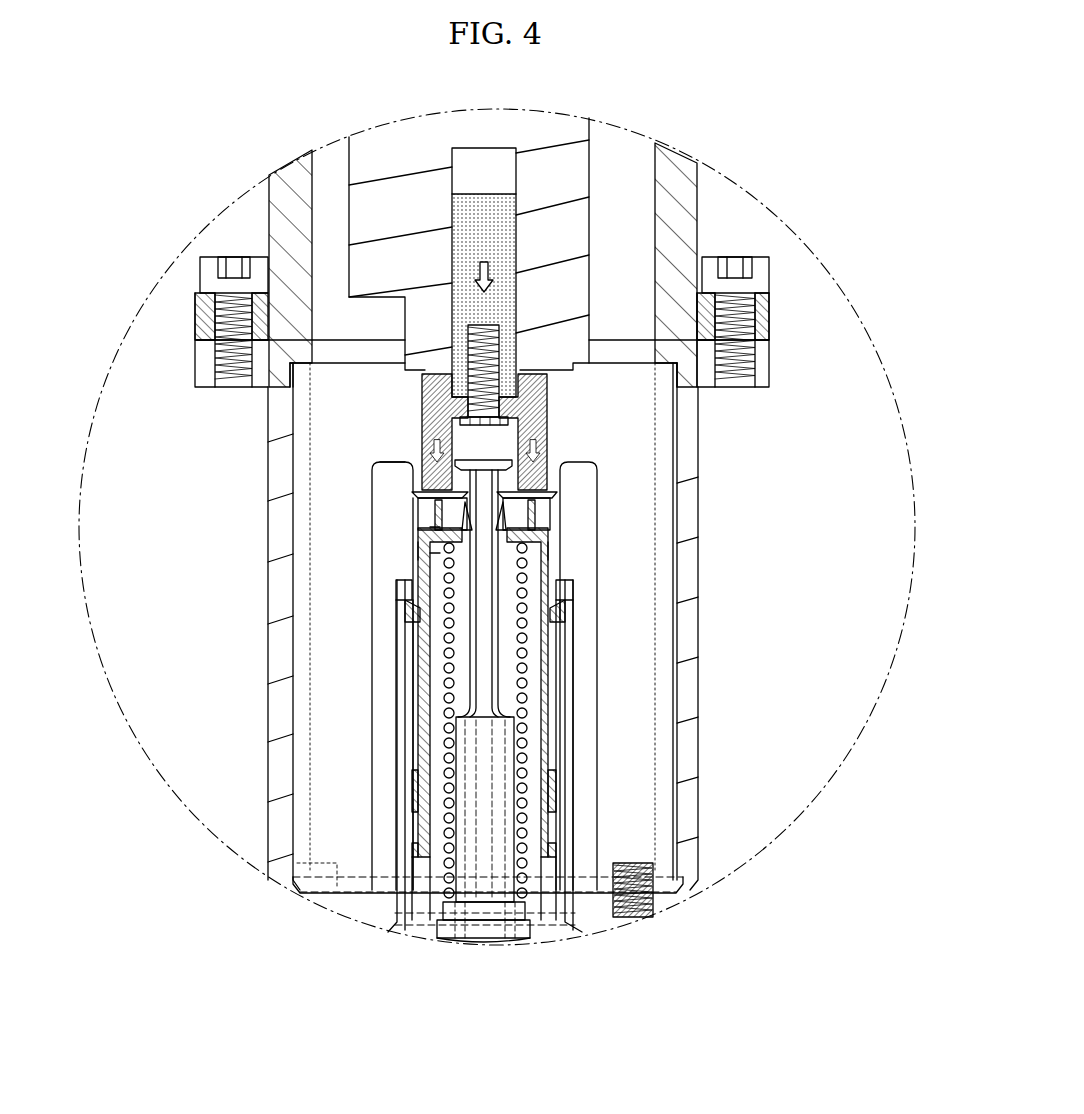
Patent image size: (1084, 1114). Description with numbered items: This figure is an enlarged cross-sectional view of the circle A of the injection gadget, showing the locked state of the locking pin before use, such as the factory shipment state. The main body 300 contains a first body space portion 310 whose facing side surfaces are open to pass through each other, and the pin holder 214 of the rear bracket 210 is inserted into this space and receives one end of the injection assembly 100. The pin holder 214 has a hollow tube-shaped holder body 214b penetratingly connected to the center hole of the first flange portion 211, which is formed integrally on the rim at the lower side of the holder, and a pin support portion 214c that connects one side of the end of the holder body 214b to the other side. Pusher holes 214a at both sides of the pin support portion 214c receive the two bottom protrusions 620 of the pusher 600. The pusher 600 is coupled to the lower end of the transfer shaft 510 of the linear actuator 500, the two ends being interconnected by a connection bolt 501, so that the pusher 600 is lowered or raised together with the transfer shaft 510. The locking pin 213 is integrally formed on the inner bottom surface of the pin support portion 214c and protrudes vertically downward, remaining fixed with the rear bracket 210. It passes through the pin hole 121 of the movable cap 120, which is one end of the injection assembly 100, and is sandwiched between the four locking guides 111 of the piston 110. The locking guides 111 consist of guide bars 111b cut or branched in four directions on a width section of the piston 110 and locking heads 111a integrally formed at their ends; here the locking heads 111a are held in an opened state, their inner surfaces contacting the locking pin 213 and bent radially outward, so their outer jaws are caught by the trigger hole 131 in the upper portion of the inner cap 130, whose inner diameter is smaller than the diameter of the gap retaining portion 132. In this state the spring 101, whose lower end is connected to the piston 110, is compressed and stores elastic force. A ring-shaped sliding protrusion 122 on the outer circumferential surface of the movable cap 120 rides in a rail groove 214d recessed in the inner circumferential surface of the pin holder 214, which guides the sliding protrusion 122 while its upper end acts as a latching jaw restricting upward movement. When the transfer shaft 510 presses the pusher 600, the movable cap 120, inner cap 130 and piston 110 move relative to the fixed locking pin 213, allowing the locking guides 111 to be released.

The injection assembly 100 is at (484, 956).
The spring 101 is at (438, 770).
The piston 110 is at (502, 788).
The locking guides 111 is at (198, 517).
The locking heads 111a is at (432, 527).
The guide bars 111b is at (432, 553).
The movable cap 120 is at (570, 500).
The pin hole 121 is at (592, 466).
The sliding protrusion 122 is at (562, 612).
The inner cap 130 is at (560, 575).
The trigger hole 131 is at (520, 538).
The gap retaining portion 132 is at (538, 517).
The rear bracket 210 is at (678, 905).
The first flange portion 211 is at (400, 898).
The locking pin 213 is at (428, 538).
The pin holder 214 is at (604, 651).
The pusher holes 214a is at (420, 466).
The holder body 214b is at (577, 738).
The pin support portion 214c is at (482, 458).
The rail groove 214d is at (572, 693).
The main body 300 is at (705, 513).
The first body space portion 310 is at (342, 640).
The linear actuator 500 is at (600, 150).
The connection bolt 501 is at (473, 330).
The transfer shaft 510 is at (548, 391).
The pusher 600 is at (560, 423).
The bottom protrusions 620 is at (425, 510).
The circle A is at (216, 224).